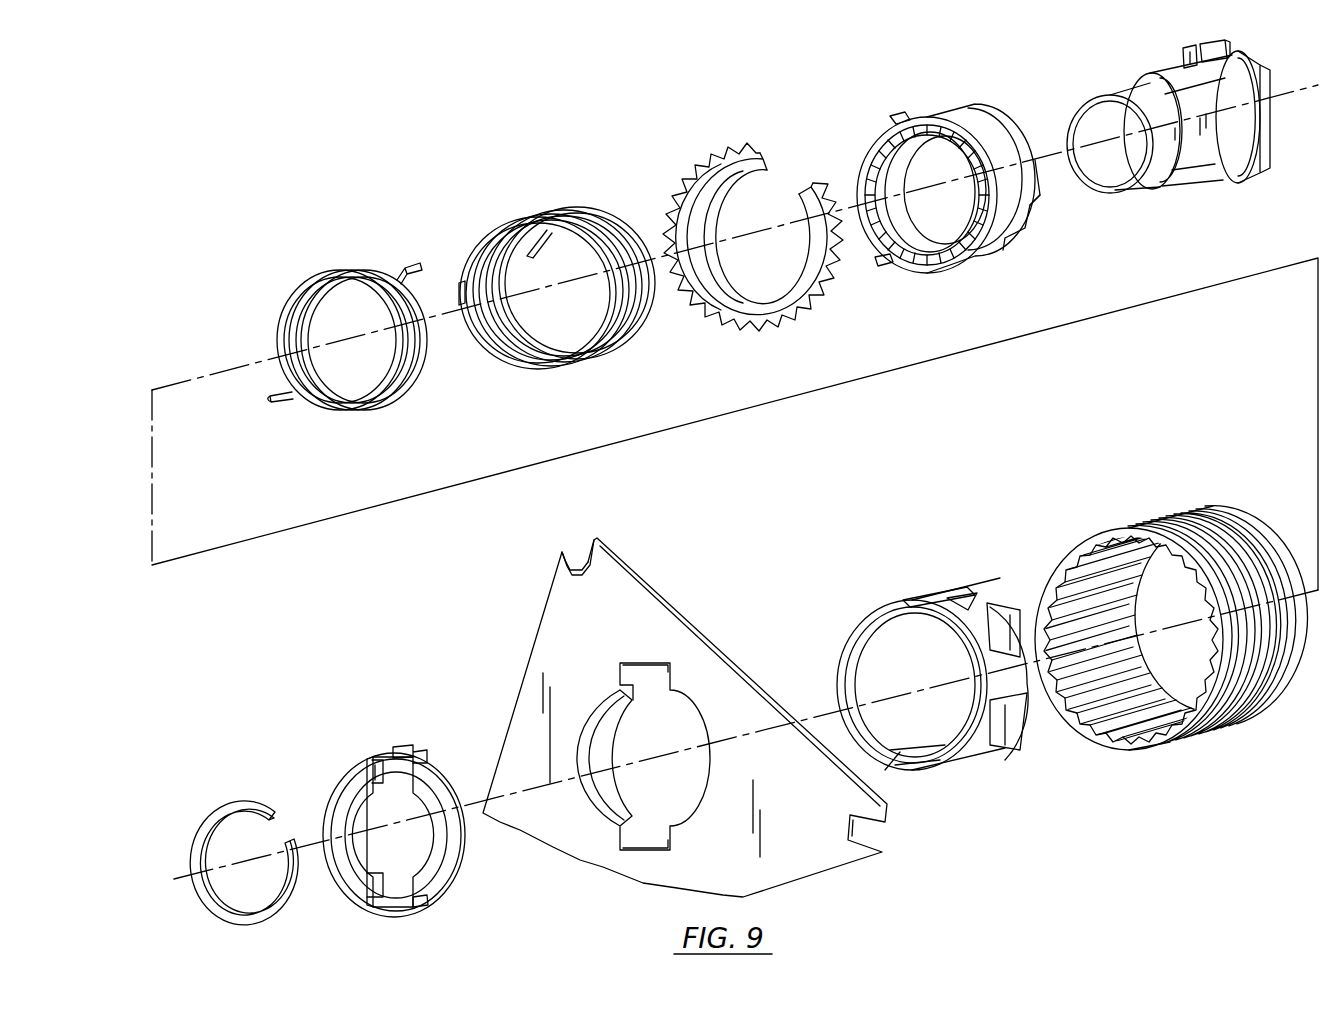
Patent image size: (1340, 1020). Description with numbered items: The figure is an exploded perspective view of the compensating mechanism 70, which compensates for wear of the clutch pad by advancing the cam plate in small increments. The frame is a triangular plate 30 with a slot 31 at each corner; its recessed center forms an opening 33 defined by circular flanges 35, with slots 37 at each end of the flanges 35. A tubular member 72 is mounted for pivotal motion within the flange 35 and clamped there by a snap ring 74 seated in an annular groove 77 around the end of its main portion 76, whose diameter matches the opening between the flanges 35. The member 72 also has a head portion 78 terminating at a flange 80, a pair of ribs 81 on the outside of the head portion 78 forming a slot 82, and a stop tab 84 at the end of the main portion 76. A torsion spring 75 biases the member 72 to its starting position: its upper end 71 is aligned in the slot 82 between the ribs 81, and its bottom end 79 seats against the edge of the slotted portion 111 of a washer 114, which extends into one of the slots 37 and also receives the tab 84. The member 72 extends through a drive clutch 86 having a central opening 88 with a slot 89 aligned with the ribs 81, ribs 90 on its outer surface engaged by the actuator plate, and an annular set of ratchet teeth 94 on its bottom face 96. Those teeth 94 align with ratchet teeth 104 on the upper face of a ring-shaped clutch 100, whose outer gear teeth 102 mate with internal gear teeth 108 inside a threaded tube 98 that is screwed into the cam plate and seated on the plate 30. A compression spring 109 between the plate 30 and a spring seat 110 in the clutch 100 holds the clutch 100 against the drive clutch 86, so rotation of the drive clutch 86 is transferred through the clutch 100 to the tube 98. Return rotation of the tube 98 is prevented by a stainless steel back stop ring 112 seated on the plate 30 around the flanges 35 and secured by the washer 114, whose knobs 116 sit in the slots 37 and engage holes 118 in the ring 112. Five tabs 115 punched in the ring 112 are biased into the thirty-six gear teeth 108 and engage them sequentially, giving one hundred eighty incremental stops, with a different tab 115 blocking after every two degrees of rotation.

The plate 30 is at (721, 702).
The slot 31 is at (585, 545).
The opening 33 is at (688, 740).
The circular flanges 35 is at (645, 815).
The slots 37 is at (648, 668).
The compensating mechanism 70 is at (334, 153).
The upper end of spring 71 is at (414, 265).
The tubular member 72 is at (1191, 141).
The snap ring 74 is at (202, 906).
The torsion spring 75 is at (352, 272).
The main portion 76 is at (1170, 180).
The groove 77 is at (1150, 90).
The head portion 78 is at (1236, 172).
The bottom end of spring 79 is at (285, 400).
The flange 80 is at (1266, 170).
The ribs 81 is at (1198, 44).
The slot 82 is at (1183, 62).
The stop tab 84 is at (1074, 182).
The drive clutch 86 is at (973, 197).
The central opening 88 is at (900, 225).
The slot 89 is at (936, 136).
The ribs 90 is at (900, 114).
The ratchet teeth 94 is at (918, 268).
The bottom face 96 is at (955, 262).
The threaded tube 98 is at (1171, 593).
The clutch 100 is at (750, 235).
The gear teeth 102 is at (718, 160).
The ratchet teeth 104 is at (773, 162).
The gear teeth 108 is at (1145, 692).
The compression spring 109 is at (586, 346).
The spring seat 110 is at (708, 304).
The slotted portion 111 is at (353, 841).
The back stop ring 112 is at (951, 651).
The washer 114 is at (392, 819).
The tabs 115 is at (932, 586).
The knobs 116 is at (396, 748).
The holes 118 is at (978, 603).